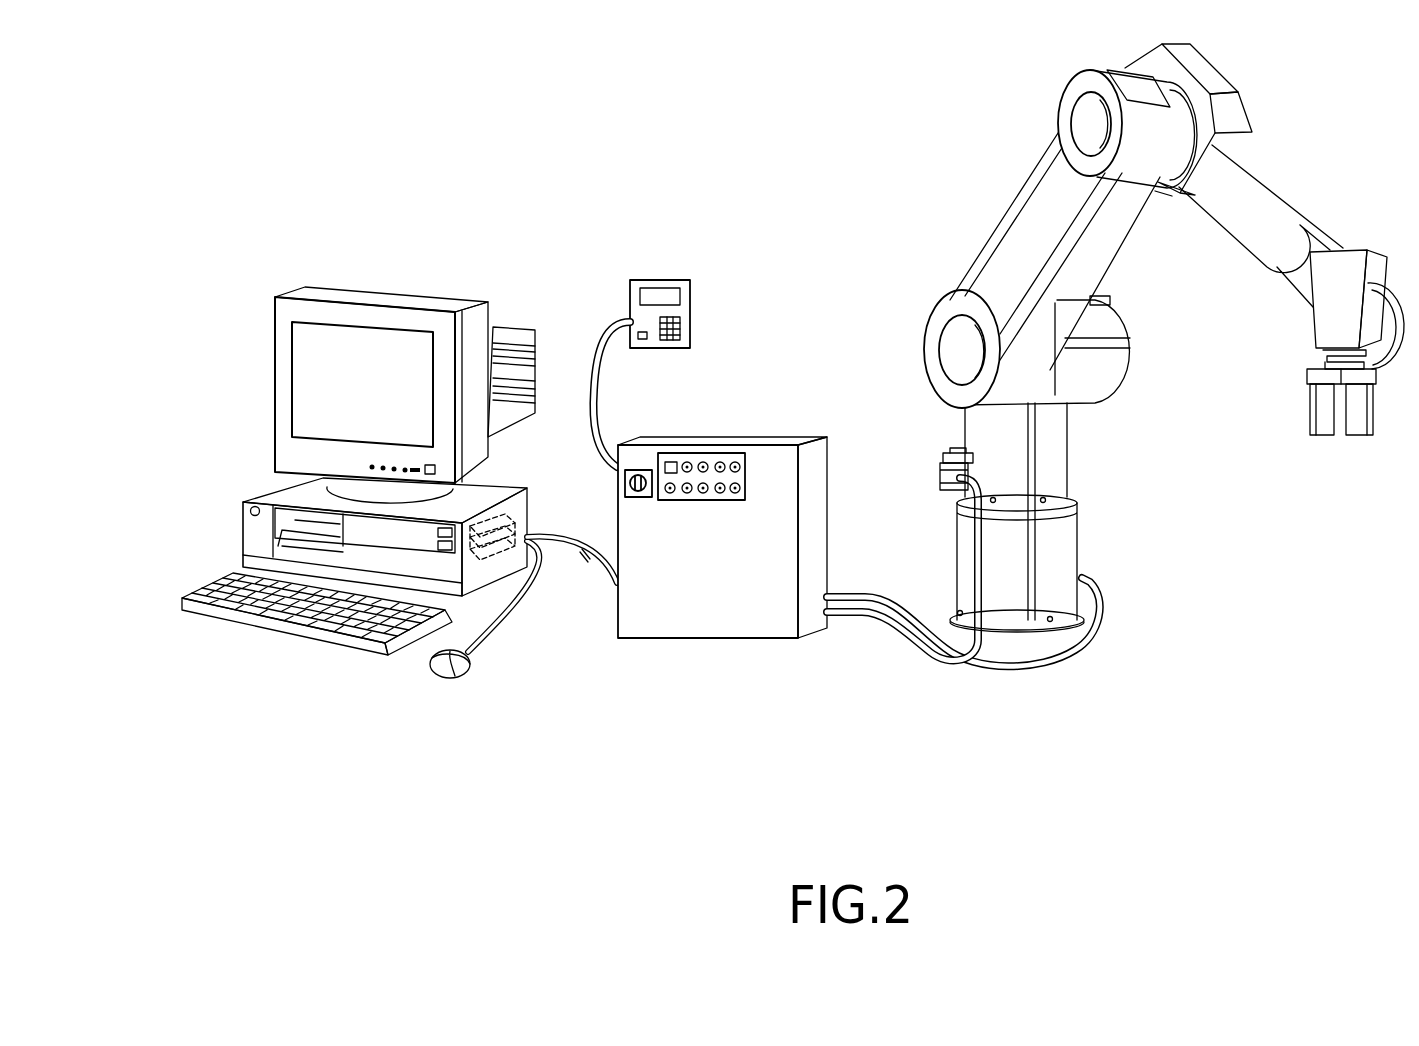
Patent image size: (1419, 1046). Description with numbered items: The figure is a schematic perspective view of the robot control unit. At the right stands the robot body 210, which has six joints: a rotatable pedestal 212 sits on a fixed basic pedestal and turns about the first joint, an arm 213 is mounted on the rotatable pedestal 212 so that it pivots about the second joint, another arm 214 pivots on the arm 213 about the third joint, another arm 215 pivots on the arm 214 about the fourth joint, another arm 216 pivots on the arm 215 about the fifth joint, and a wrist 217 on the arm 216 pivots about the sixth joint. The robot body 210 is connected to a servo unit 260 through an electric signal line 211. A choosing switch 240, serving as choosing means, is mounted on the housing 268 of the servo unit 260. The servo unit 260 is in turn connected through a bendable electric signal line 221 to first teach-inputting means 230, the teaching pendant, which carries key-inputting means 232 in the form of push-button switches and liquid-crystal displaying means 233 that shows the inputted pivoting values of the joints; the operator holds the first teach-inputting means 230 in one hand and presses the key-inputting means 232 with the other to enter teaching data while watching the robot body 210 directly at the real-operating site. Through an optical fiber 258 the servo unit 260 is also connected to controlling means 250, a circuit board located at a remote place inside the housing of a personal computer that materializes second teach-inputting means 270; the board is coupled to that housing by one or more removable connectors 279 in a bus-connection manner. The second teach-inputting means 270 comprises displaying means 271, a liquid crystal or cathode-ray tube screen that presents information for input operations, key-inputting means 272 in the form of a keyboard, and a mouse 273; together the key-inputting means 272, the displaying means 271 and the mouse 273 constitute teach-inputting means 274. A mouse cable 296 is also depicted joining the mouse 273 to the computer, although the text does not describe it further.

The robot body 210 is at (1115, 368).
The electric signal line 211 is at (893, 638).
The rotatable pedestal 212 is at (1117, 377).
The arm 213 is at (1007, 238).
The arm 214 is at (1216, 175).
The arm 215 is at (1268, 187).
The arm 216 is at (1325, 326).
The wrist 217 is at (1325, 430).
The bendable electric signal line 221 is at (613, 332).
The first teach-inputting means 230 is at (701, 314).
The key-inputting means 232 is at (642, 339).
The liquid-crystal displaying means 233 is at (658, 289).
The choosing switch 240 is at (625, 483).
The controlling means 250 is at (528, 506).
The optical fiber 258 is at (610, 580).
The servo unit 260 is at (690, 543).
The housing 268 is at (760, 466).
The second teach-inputting means 270 is at (364, 557).
The displaying means 271 is at (278, 380).
The key-inputting means 272 is at (243, 628).
The mouse 273 is at (398, 679).
The teach-inputting means 274 is at (360, 653).
The removable connectors 279 is at (486, 572).
The mouse cable 296 is at (470, 678).